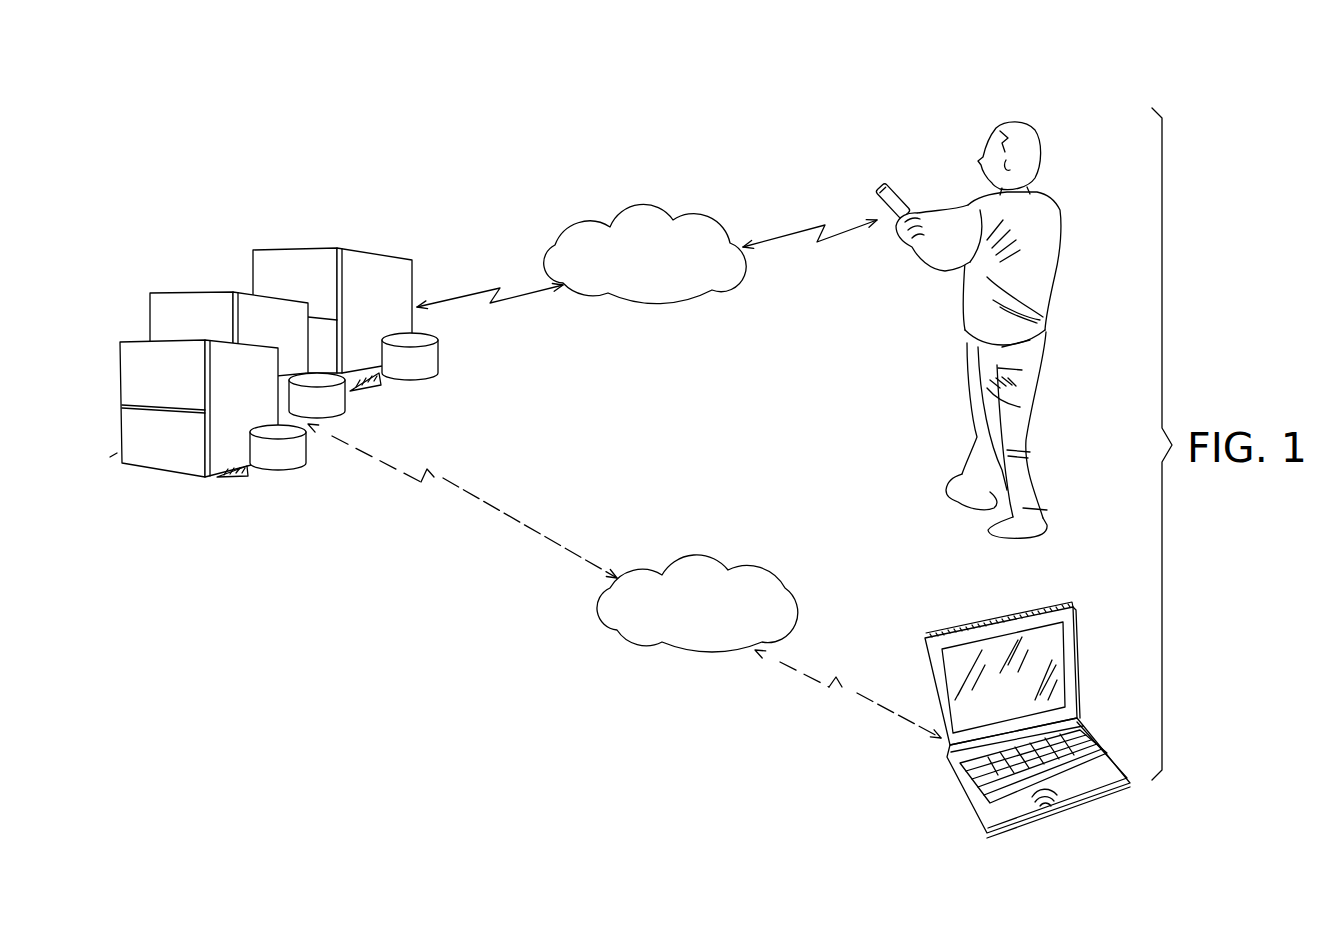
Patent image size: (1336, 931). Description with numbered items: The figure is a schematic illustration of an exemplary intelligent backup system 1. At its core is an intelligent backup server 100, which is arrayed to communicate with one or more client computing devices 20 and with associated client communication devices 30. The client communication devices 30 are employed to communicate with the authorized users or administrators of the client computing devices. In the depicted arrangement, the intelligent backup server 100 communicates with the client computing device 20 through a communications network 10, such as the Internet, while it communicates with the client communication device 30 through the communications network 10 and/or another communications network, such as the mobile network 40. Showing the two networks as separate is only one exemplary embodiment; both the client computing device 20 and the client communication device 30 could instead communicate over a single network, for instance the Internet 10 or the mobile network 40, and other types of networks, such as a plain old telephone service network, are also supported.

The intelligent backup system 1 is at (492, 50).
The communications network 10 is at (756, 572).
The client computing device 20 is at (958, 790).
The client communication device 30 is at (883, 186).
The mobile network 40 is at (702, 222).
The intelligent backup server 100 is at (237, 292).